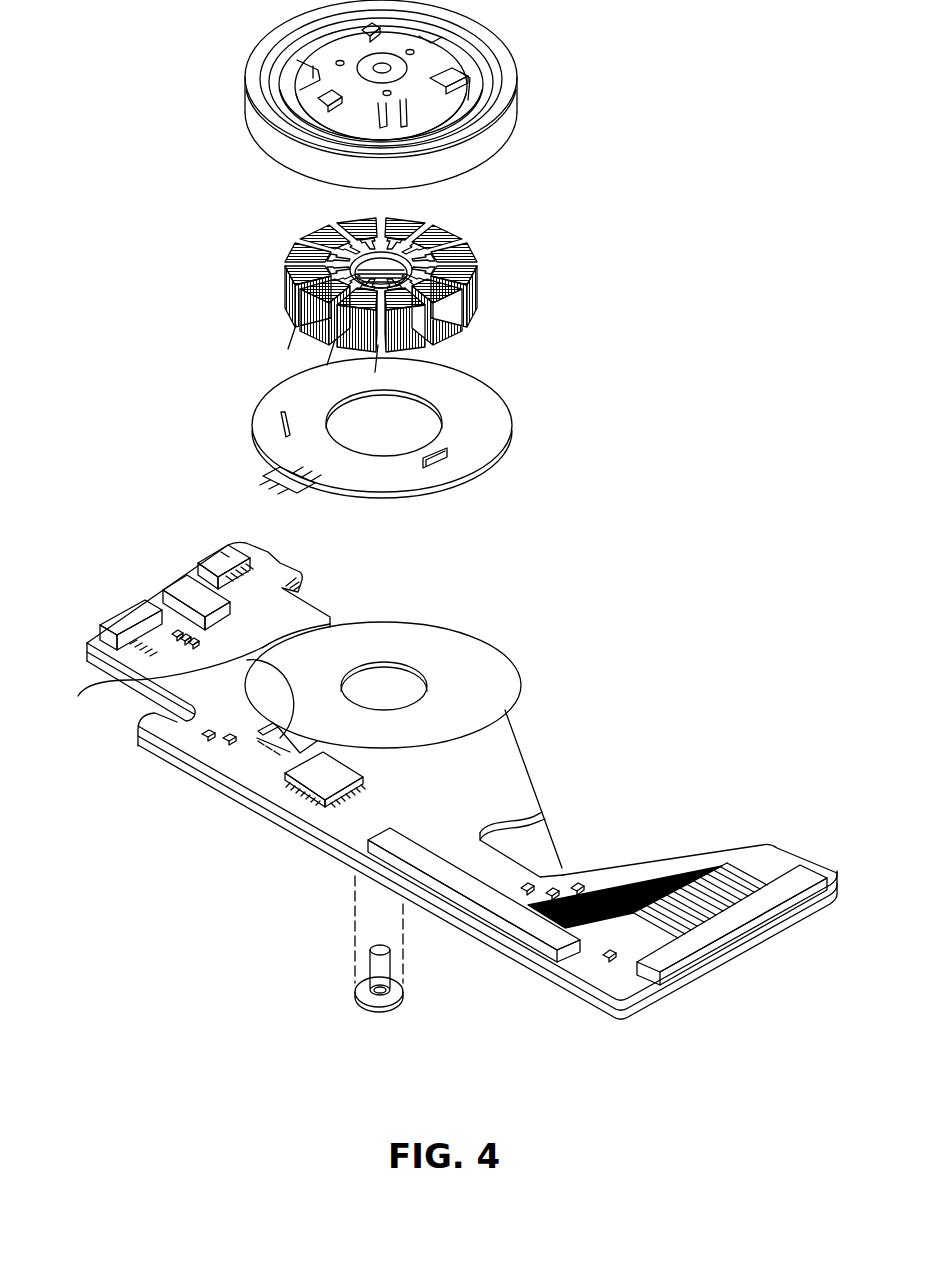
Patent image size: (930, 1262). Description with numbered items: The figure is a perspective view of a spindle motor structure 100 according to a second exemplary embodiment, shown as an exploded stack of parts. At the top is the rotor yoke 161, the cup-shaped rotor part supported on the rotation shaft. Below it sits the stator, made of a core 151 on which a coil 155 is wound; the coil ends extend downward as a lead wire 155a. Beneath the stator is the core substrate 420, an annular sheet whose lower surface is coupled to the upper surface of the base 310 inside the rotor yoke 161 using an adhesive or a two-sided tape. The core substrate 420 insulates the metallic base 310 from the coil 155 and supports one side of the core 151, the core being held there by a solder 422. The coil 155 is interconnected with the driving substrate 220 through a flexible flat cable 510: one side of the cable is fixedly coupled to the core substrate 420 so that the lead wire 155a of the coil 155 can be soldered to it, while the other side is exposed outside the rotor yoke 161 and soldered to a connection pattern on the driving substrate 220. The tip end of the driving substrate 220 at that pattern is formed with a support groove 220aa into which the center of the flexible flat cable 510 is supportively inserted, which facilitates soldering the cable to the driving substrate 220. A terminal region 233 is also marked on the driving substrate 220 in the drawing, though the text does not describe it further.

The motor assembly 100 is at (258, 210).
The rotor yoke 161 is at (483, 143).
The coil 155 is at (475, 256).
The core 151 is at (447, 285).
The lead wire 155a is at (375, 374).
The flexible flat cable 510 is at (262, 473).
The core substrate 420 is at (443, 457).
The solder 422 is at (447, 450).
The support groove 220aa is at (150, 689).
The terminal portion 233 is at (272, 746).
The base 310 is at (533, 853).
The driving substrate 220 is at (435, 810).